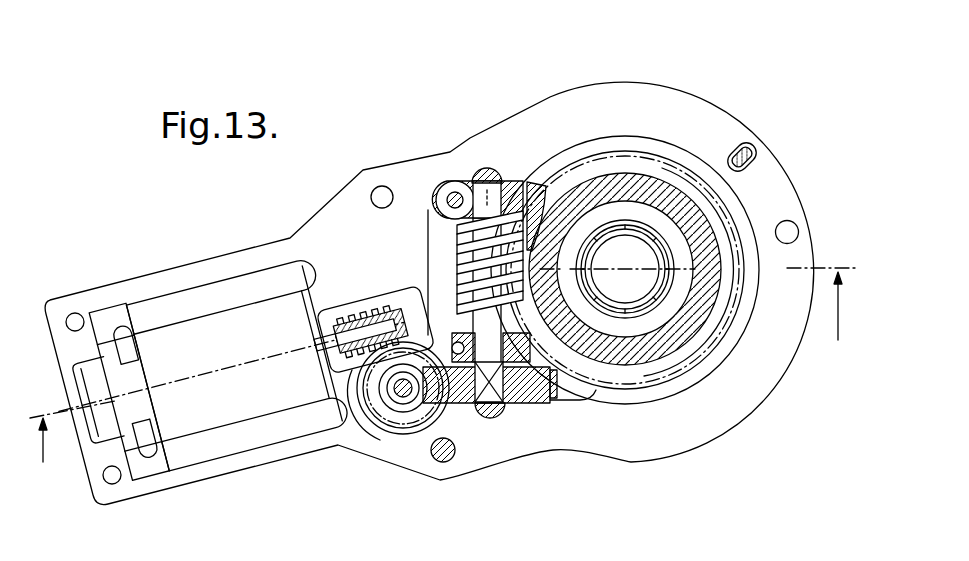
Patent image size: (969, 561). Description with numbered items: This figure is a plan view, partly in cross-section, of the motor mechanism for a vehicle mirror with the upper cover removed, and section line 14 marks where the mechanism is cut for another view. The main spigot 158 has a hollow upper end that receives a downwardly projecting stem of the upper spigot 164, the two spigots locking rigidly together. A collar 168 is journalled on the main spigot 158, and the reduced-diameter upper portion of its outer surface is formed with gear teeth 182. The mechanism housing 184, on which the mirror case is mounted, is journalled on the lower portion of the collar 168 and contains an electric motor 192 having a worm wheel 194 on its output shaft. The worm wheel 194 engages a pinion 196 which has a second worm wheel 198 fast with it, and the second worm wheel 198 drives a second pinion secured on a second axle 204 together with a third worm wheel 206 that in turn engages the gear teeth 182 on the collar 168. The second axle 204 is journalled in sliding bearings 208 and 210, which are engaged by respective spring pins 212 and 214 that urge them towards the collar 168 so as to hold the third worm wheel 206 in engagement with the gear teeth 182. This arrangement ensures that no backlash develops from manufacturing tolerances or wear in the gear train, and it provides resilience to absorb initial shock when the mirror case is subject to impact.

The section line 14- 14 is at (446, 382).
The main spigot 158 is at (684, 280).
The upper spigot 164 is at (641, 263).
The collar 168 is at (638, 183).
The gear teeth 182 is at (527, 225).
The mechanism housing 184 is at (318, 233).
The electric motor 192 is at (203, 333).
The worm wheel 194 is at (387, 302).
The pinion 196 is at (372, 418).
The second worm wheel 198 is at (402, 407).
The second axle 204 is at (504, 177).
The third worm wheel 206 is at (432, 207).
The sliding bearing 208 is at (452, 300).
The sliding bearing 210 is at (484, 212).
The spring pin 212 is at (466, 403).
The spring pin 214 is at (452, 196).